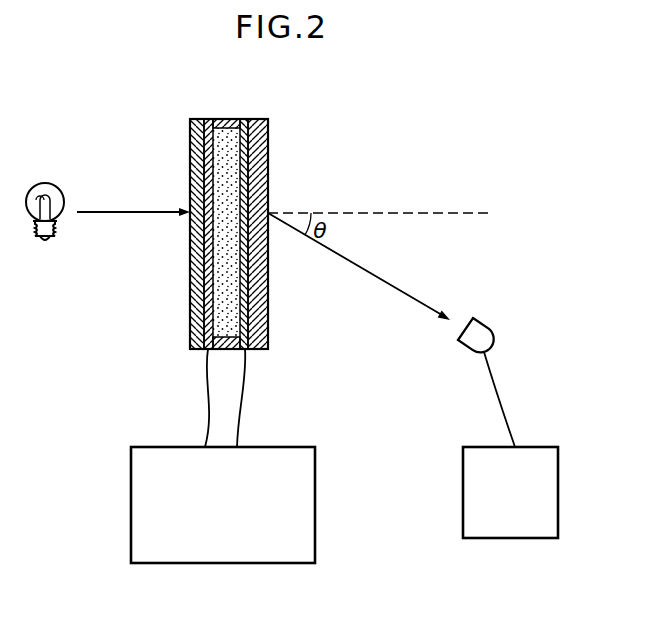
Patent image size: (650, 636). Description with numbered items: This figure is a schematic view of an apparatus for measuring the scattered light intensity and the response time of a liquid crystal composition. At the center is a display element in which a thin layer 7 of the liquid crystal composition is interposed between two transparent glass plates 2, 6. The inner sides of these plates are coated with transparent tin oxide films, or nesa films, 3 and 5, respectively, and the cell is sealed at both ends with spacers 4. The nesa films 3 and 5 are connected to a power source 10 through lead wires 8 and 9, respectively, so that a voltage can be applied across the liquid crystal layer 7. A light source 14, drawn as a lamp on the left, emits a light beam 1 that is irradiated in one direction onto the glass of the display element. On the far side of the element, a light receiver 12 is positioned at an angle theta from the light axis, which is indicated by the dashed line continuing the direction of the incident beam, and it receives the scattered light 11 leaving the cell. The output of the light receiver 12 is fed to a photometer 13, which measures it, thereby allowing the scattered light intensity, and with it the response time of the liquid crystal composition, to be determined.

The light beam 1 is at (115, 212).
The transparent glass plate 2 is at (190, 134).
The transparent tin oxide film 3 is at (211, 118).
The spacer 4 is at (226, 118).
The transparent tin oxide film 5 is at (247, 118).
The transparent glass plate 6 is at (268, 128).
The thin layer of liquid crystal composition 7 is at (232, 180).
The lead wire 8 is at (208, 401).
The lead wire 9 is at (245, 401).
The power source 10 is at (315, 502).
The scattered light 11 is at (410, 292).
The light receiver 12 is at (489, 323).
The photometer 13 is at (538, 446).
The light source 14 is at (45, 185).